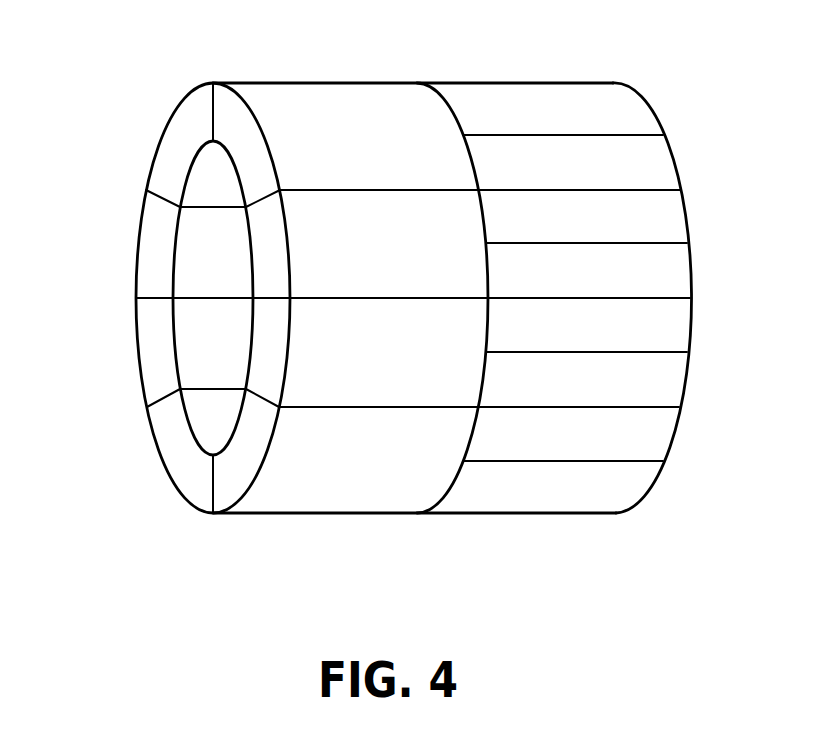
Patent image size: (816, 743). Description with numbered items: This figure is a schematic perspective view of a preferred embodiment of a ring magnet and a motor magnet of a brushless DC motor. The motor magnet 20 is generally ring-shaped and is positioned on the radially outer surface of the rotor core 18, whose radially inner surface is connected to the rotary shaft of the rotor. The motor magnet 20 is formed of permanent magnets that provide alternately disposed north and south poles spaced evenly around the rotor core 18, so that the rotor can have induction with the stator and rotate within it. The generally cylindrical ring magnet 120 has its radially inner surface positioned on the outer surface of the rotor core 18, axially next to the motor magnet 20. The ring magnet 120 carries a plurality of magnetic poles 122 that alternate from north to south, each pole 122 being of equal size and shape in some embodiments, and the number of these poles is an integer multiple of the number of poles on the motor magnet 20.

The rotor core 18 is at (186, 339).
The motor magnet 20 is at (341, 548).
The ring magnet 120 is at (541, 558).
The magnetic poles 122 is at (630, 103).